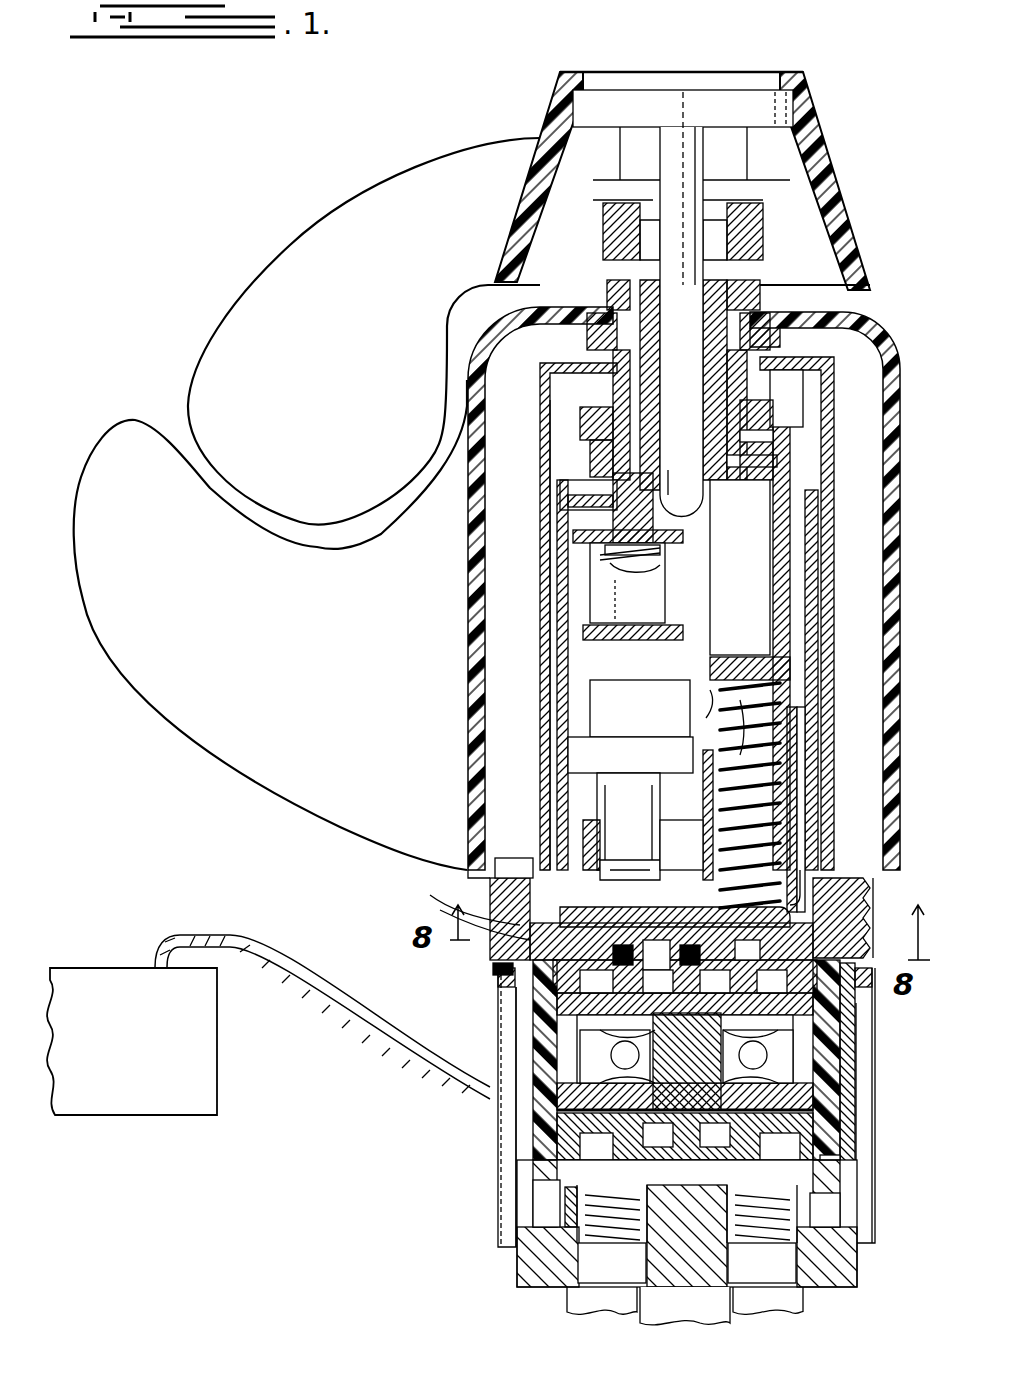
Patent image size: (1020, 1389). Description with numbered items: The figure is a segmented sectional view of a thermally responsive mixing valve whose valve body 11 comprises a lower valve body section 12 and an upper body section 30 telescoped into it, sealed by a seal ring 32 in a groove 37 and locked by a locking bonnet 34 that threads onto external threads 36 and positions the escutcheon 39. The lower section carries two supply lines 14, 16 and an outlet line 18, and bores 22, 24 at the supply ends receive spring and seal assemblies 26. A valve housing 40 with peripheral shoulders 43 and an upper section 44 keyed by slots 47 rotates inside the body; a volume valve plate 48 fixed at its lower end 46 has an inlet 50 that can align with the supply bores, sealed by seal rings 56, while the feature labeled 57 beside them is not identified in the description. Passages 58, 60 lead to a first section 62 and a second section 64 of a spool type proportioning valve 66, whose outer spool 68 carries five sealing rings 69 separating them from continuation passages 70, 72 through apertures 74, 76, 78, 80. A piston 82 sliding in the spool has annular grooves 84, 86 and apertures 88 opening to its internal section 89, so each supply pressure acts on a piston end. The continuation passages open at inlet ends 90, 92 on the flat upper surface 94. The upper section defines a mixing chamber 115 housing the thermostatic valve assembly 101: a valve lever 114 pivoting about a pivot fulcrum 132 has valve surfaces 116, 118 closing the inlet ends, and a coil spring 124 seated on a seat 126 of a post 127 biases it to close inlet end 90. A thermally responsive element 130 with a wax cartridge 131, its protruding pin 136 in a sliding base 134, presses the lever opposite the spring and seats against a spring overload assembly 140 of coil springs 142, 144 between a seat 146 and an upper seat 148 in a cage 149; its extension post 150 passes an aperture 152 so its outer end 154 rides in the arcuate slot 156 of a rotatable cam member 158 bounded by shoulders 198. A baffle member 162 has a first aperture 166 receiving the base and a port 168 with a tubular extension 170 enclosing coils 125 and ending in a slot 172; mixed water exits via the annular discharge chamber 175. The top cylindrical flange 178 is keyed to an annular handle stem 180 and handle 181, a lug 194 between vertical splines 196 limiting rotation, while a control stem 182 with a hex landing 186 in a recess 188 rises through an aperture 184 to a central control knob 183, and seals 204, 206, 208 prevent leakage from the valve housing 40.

The valve body 11 is at (508, 1276).
The lower valve body section 12 is at (840, 1118).
The supply line 14 is at (803, 1305).
The supply line 16 is at (565, 1300).
The outlet line 18 is at (700, 1311).
The bore 22 is at (800, 1210).
The bore 24 is at (575, 1240).
The spring and seal assemblies 26 is at (690, 1180).
The upper body section 30 is at (822, 690).
The seal ring 32 is at (874, 912).
The locking bonnet 34 is at (475, 870).
The external threads 36 is at (872, 890).
The groove 37 is at (461, 918).
The escutcheon 39 is at (290, 1000).
The valve housing 40 is at (820, 500).
The peripheral shoulders 43 is at (497, 1005).
The upper section 44 is at (836, 612).
The lower end 46 is at (833, 1181).
The slots 47 is at (840, 1030).
The volume valve plate 48 is at (833, 1192).
The inlet 50 is at (780, 1150).
The seal rings 56 is at (655, 1145).
The passage 57 is at (658, 1135).
The passage 58 is at (840, 1158).
The passage 60 is at (533, 1185).
The first section 62 is at (876, 1050).
The second section 64 is at (514, 1130).
The spool type proportioning valve 66 is at (499, 1040).
The outer spool 68 is at (533, 1015).
The sealing rings 69 is at (888, 1013).
The continuation passage 70 is at (715, 981).
The continuation passage 72 is at (656, 954).
The aperture 74 is at (840, 1138).
The aperture 76 is at (533, 1163).
The aperture 78 is at (772, 981).
The aperture 80 is at (658, 981).
The piston 82 is at (700, 1065).
The annular groove 84 is at (820, 1090).
The annular groove 86 is at (652, 1098).
The apertures 88 is at (762, 1050).
The internal section 89 is at (848, 1068).
The inlet end 90 is at (800, 900).
The inlet end 92 is at (530, 945).
The flat upper surface 94 is at (748, 944).
The thermostatic valve assembly 101 is at (450, 902).
The valve lever 114 is at (495, 900).
The mixing chamber 115 is at (700, 806).
The lower valve surface 116 is at (790, 905).
The lower valve surface 118 is at (555, 962).
The coil spring 124 is at (790, 698).
The coils 125 is at (735, 722).
The seat 126 is at (765, 655).
The post 127 is at (795, 585).
The thermally responsive element 130 is at (540, 752).
The wax cartridge 131 is at (548, 766).
The pivot fulcrum 132 is at (700, 855).
The sliding base 134 is at (630, 755).
The protruding pin 136 is at (630, 862).
The spring overload assembly 140 is at (570, 640).
The coil spring 142 is at (595, 572).
The coil spring 144 is at (610, 570).
The seat 146 is at (645, 590).
The upper seat 148 is at (670, 568).
The cage 149 is at (575, 548).
The extension post 150 is at (640, 522).
The aperture 152 is at (612, 508).
The outer end 154 is at (615, 478).
The arcuate slot 156 is at (655, 482).
The rotatable cam member 158 is at (780, 445).
The baffle member 162 is at (580, 855).
The first aperture 166 is at (600, 855).
The port 168 is at (803, 800).
The tubular extension 170 is at (800, 728).
The slot 172 is at (690, 738).
The annular discharge chamber 175 is at (565, 1205).
The top cylindrical flange 178 is at (770, 445).
The annular handle stem 180 is at (718, 415).
The handle 181 is at (867, 330).
The control stem 182 is at (718, 378).
The central control knob 183 is at (840, 200).
The aperture 184 is at (705, 352).
The hex landing 186 is at (595, 458).
The recess 188 is at (582, 428).
The lug 194 is at (800, 405).
The vertical splines 196 is at (790, 341).
The shoulders 198 is at (720, 290).
The seal 204 is at (612, 388).
The seal 206 is at (600, 335).
The seal 208 is at (625, 258).